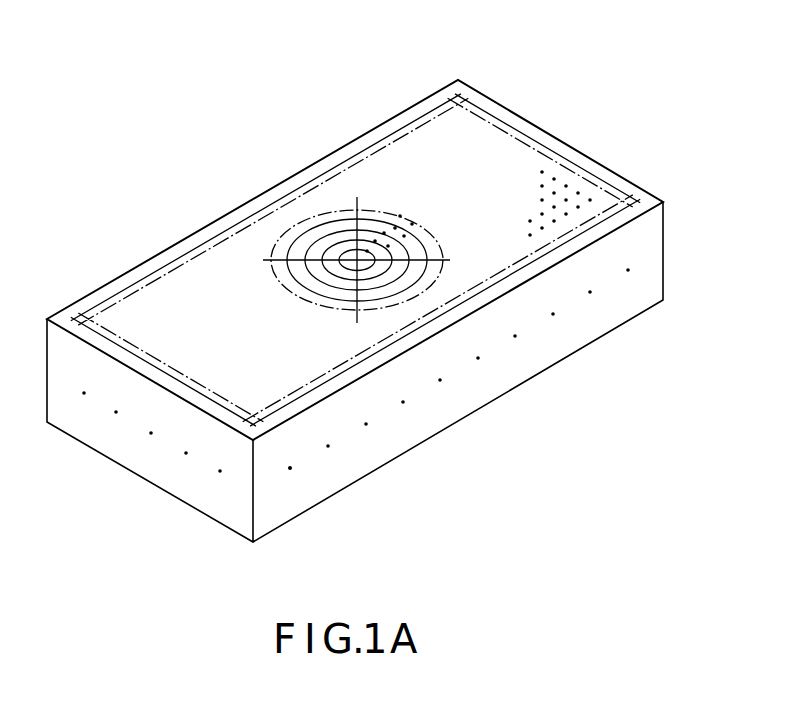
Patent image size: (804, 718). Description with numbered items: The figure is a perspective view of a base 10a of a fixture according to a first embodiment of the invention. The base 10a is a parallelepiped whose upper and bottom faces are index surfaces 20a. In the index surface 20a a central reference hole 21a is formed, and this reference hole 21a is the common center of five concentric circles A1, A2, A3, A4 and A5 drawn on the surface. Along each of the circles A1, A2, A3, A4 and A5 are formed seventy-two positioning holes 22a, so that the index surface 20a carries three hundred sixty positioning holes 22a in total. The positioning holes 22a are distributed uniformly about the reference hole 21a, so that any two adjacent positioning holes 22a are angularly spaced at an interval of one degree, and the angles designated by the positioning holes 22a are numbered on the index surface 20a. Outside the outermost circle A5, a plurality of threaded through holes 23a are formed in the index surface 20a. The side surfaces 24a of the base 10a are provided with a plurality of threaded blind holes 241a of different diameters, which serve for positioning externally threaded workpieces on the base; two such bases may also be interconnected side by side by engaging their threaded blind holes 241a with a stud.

The base 10a is at (522, 95).
The index surface 20a is at (432, 100).
The central reference hole 21a is at (358, 255).
The positioning holes 22a is at (400, 215).
The threaded through holes 23a is at (590, 174).
The side surfaces 24a is at (385, 455).
The threaded blind holes 241a is at (291, 470).
The concentric circle A1 is at (356, 255).
The concentric circle A2 is at (333, 245).
The concentric circle A3 is at (318, 238).
The concentric circle A4 is at (290, 240).
The outermost circle A5 is at (277, 279).